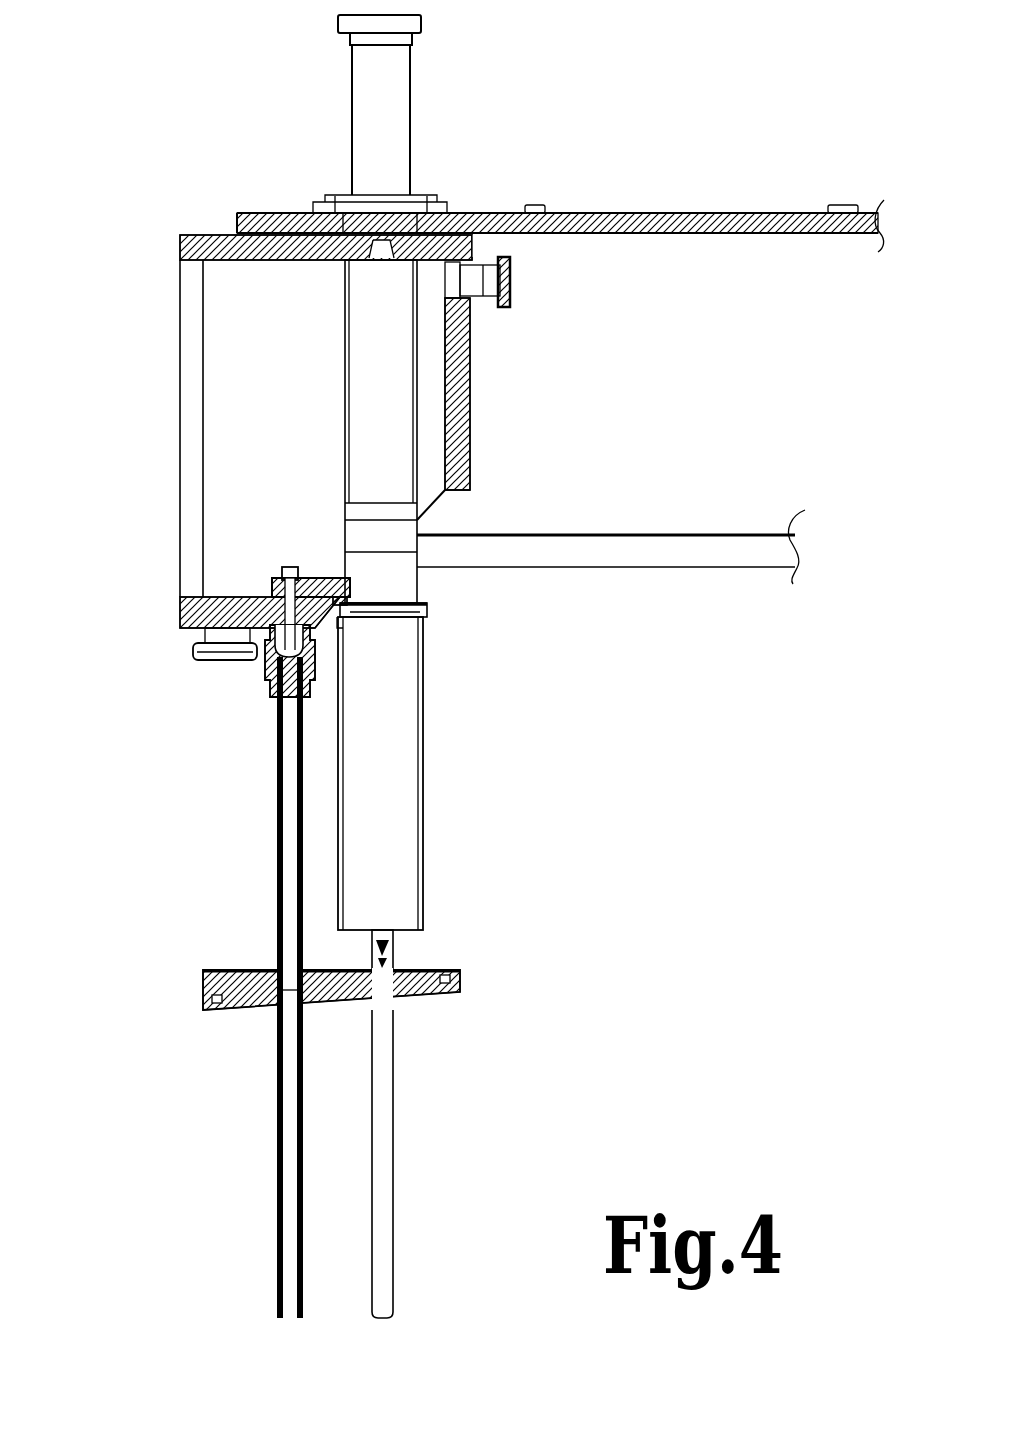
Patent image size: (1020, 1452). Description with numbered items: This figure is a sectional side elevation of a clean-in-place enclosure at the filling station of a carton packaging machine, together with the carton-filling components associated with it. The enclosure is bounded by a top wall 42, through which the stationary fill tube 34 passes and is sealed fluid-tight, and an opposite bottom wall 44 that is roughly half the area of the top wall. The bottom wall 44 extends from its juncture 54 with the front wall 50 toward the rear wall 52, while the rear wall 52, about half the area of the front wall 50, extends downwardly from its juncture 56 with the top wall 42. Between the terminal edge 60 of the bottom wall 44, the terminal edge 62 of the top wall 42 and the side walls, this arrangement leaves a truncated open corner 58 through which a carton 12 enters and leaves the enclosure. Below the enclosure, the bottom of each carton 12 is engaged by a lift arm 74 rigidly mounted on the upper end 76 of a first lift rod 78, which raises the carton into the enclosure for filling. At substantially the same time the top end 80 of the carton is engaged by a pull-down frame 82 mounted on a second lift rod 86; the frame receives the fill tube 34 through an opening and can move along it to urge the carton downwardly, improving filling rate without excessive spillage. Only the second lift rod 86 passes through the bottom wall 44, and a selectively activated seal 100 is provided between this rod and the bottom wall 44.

The carton 12 is at (423, 723).
The fill tube 34 is at (345, 388).
The top wall 42 is at (213, 235).
The bottom wall 44 is at (182, 606).
The front wall 50 is at (192, 449).
The rear wall 52 is at (470, 362).
The juncture 54 is at (185, 597).
The juncture 56 is at (473, 243).
The truncated open corner 58 is at (462, 516).
The terminal edge 60 is at (337, 622).
The terminal edge 62 is at (462, 485).
The lift arm 74 is at (395, 944).
The upper end 76 is at (388, 995).
The first lift rod 78 is at (392, 1098).
The top end 80 is at (414, 626).
The pull-down frame 82 is at (320, 578).
The second lift rod 86 is at (277, 925).
The selectively activated seal 100 is at (254, 664).